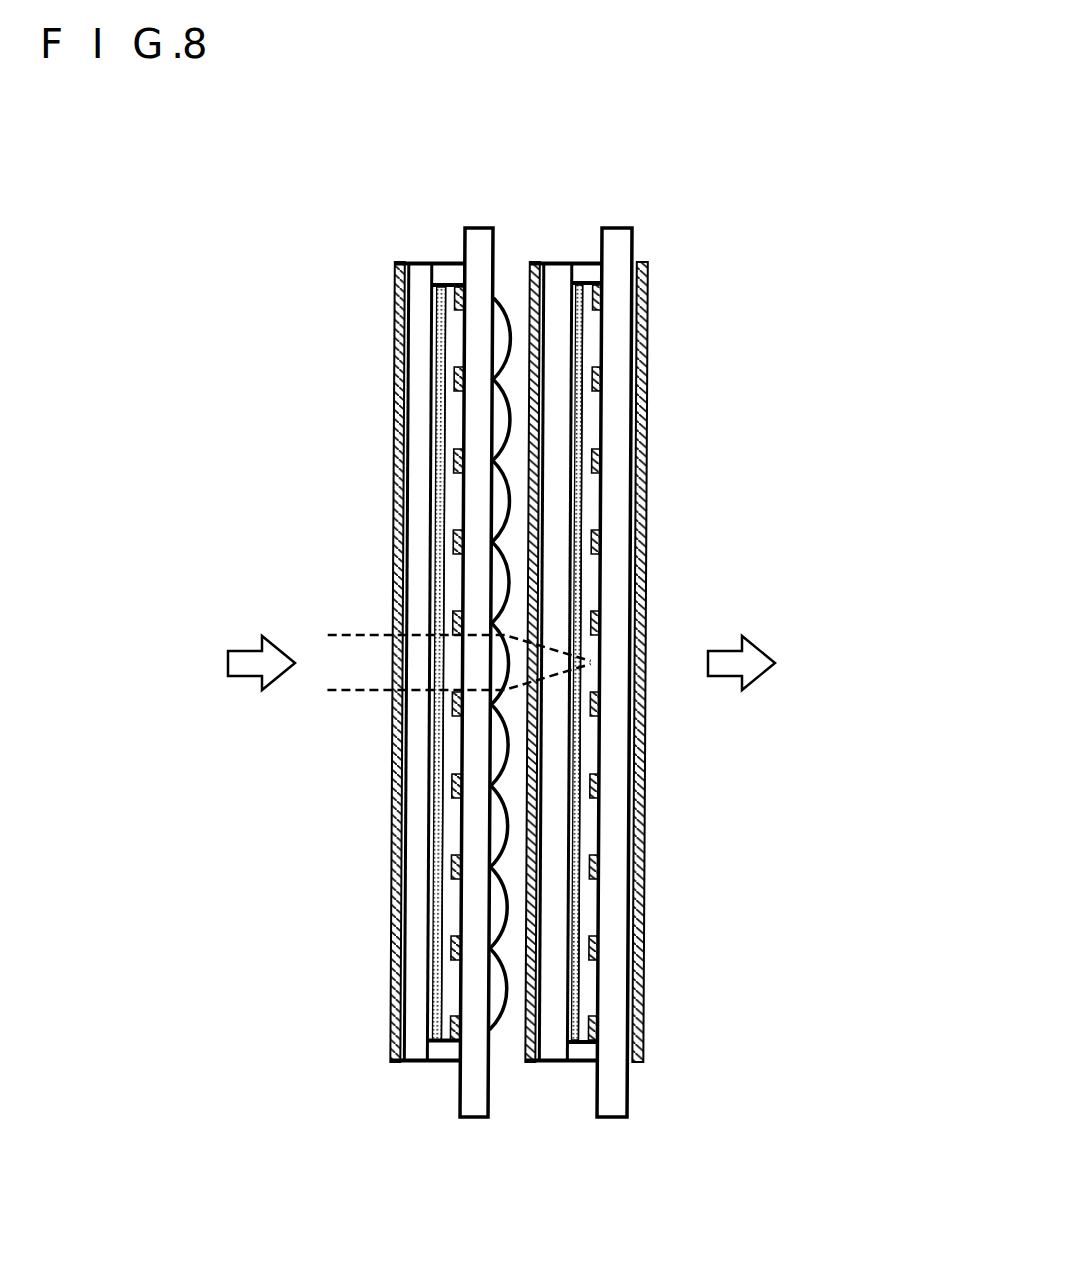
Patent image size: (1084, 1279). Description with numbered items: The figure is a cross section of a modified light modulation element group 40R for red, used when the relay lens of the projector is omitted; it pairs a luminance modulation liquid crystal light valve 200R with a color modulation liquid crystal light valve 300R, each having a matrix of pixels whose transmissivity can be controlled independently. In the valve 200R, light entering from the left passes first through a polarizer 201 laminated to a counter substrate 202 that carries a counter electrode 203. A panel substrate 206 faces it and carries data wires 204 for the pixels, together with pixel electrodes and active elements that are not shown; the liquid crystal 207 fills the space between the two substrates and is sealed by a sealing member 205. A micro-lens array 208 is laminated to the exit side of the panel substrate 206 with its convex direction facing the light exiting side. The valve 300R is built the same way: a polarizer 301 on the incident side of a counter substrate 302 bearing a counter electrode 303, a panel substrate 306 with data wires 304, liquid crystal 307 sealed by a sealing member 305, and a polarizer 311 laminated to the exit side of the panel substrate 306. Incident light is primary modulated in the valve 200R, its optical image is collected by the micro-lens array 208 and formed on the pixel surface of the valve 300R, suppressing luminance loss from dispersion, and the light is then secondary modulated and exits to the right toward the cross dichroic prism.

The light modulation element group 40R is at (838, 148).
The liquid crystal light valve (luminance modulation light valve) 200R is at (495, 1134).
The liquid crystal light valve (color modulation light valve) 300R is at (635, 1134).
The polarizer 201 is at (398, 290).
The counter substrate 202 is at (417, 262).
The counter electrode 203 is at (432, 354).
The data wires 204 is at (450, 298).
The sealing member 205 is at (452, 261).
The panel substrate 206 is at (483, 237).
The liquid crystal 207 is at (455, 905).
The micro-lens array 208 is at (495, 297).
The polarizer 301 is at (537, 262).
The counter substrate 302 is at (560, 262).
The counter electrode 303 is at (584, 500).
The data wires 304 is at (600, 299).
The sealing member 305 is at (600, 262).
The panel substrate 306 is at (620, 246).
The liquid crystal 307 is at (588, 828).
The polarizer 311 is at (646, 376).